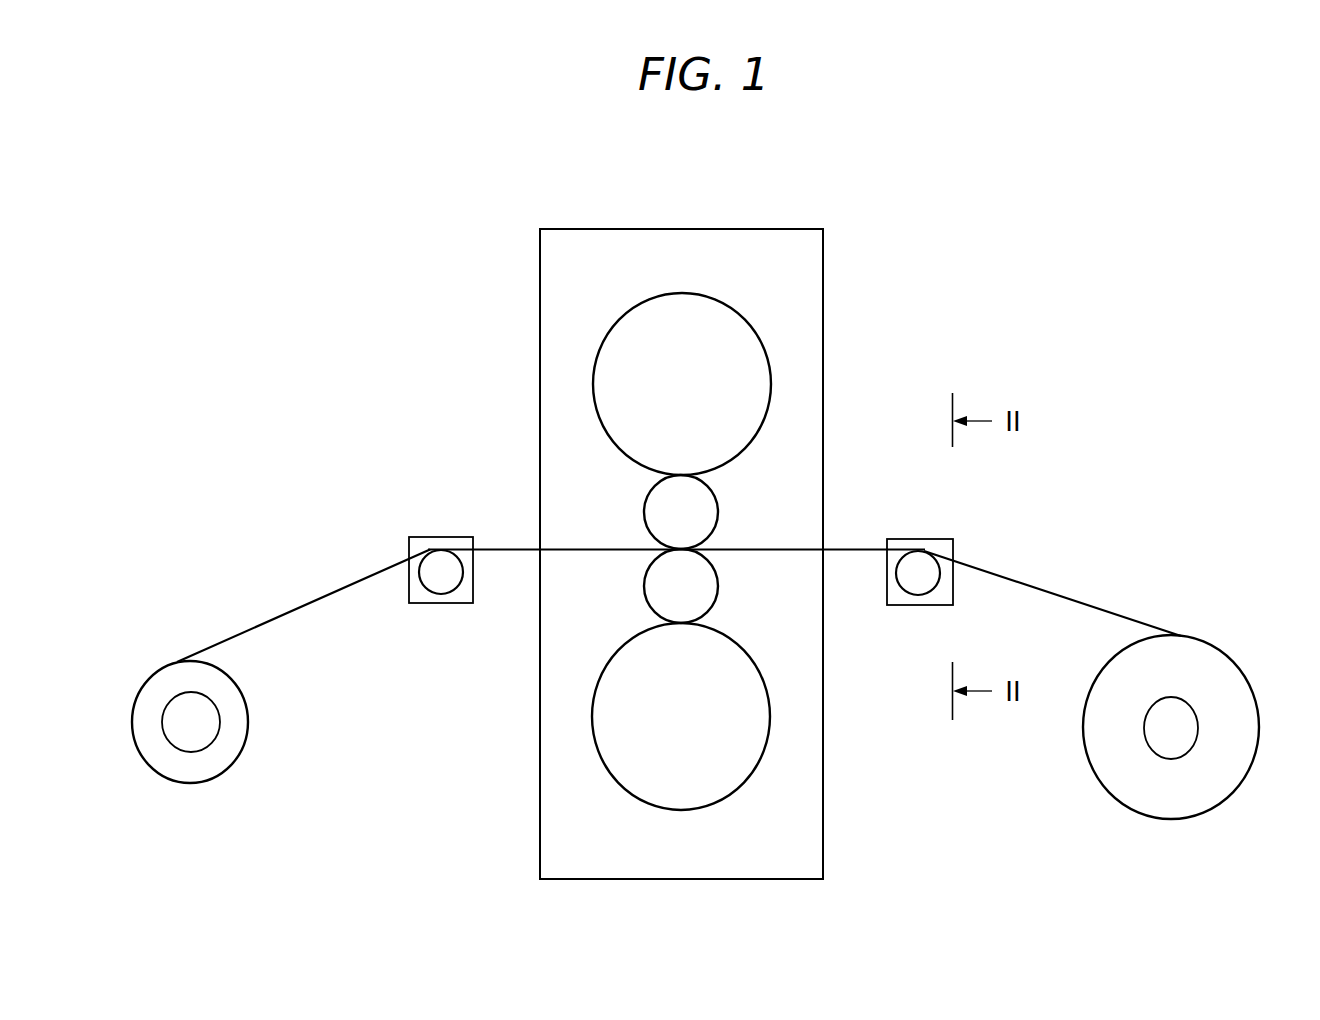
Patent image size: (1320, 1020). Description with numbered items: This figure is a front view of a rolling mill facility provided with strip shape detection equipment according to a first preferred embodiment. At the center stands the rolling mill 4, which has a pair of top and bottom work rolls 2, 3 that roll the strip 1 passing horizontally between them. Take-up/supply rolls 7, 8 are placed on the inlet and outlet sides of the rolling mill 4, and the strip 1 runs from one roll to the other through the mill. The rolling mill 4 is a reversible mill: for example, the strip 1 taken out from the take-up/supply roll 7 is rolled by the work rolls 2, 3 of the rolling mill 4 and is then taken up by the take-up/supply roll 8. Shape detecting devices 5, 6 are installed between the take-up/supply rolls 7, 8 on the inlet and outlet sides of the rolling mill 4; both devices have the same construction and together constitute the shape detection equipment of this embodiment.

The strip 1 is at (498, 548).
The top work roll 2 is at (714, 494).
The bottom work roll 3 is at (718, 600).
The rolling mill 4 is at (791, 229).
The shape detecting device 5 is at (937, 539).
The shape detecting device 6 is at (417, 537).
The take-up/supply roll 7 is at (1185, 695).
The take-up/supply roll 8 is at (220, 722).